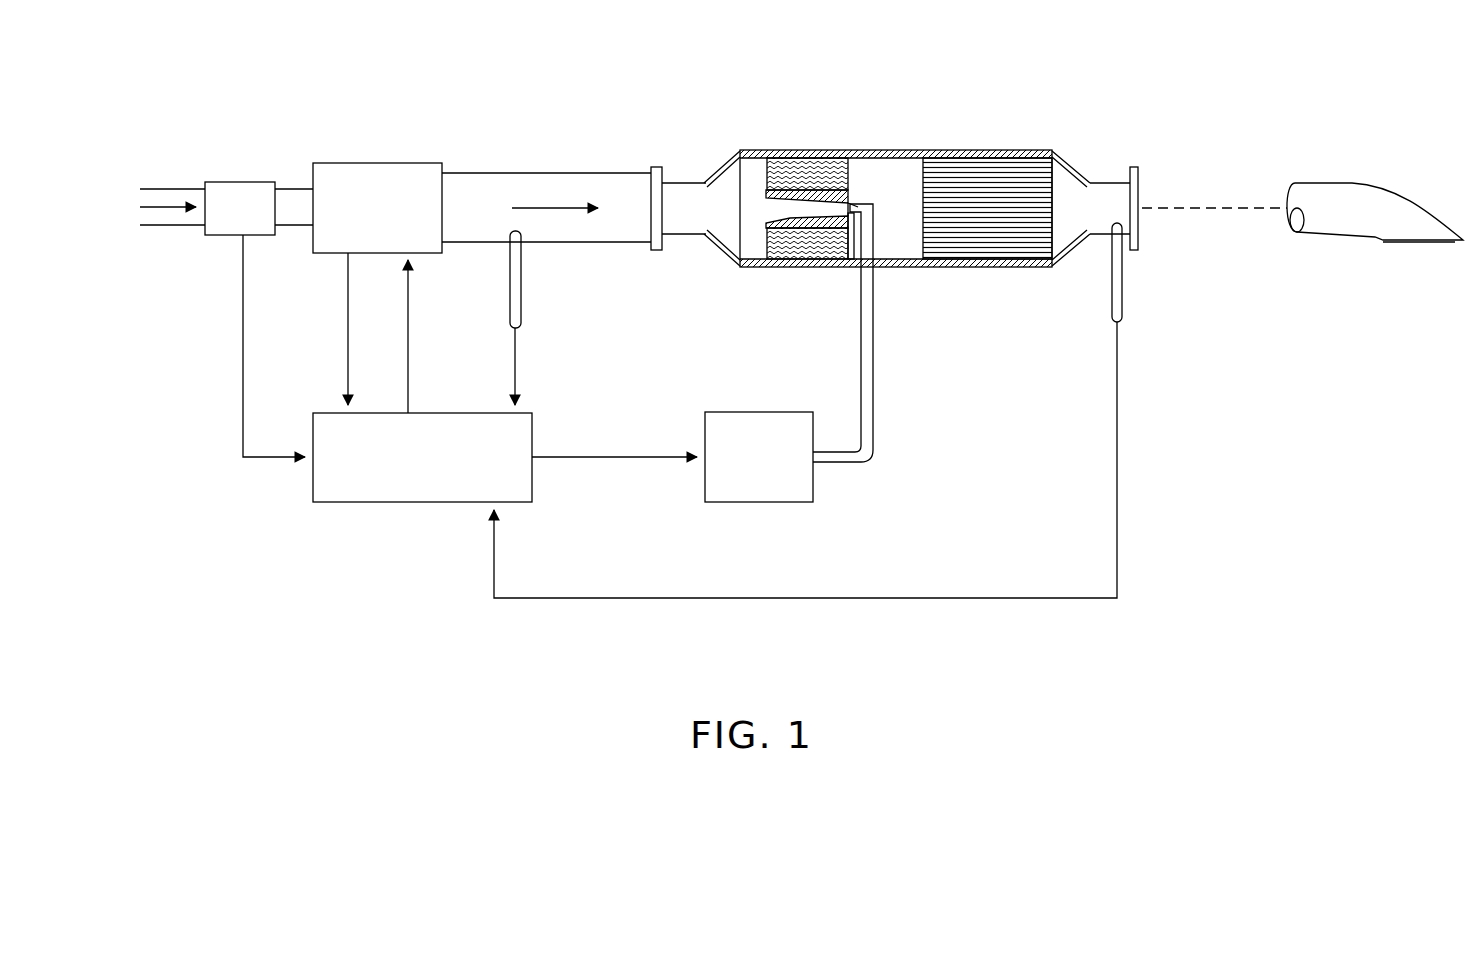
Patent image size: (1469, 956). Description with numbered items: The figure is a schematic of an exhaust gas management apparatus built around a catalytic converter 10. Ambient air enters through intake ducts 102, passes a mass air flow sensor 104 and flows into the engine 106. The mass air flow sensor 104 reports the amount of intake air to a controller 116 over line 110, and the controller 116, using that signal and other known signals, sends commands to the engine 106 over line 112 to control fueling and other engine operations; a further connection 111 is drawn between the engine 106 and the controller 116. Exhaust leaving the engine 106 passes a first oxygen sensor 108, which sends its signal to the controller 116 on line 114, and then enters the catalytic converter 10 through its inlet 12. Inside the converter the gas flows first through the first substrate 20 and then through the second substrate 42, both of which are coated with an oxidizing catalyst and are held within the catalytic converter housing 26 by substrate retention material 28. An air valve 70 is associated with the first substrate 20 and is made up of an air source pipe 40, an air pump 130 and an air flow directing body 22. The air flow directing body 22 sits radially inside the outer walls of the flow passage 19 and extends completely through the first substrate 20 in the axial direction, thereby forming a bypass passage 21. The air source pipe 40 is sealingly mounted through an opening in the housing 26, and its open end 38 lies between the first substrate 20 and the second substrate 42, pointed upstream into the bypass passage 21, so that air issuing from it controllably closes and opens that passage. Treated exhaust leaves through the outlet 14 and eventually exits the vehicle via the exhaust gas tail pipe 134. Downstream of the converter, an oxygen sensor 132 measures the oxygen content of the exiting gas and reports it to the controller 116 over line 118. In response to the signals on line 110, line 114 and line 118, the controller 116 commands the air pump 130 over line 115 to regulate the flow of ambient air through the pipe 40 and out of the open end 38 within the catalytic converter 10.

The catalytic converter 10 is at (803, 146).
The inlet 12 is at (676, 182).
The outlet 14 is at (1118, 195).
The flow passage 19 is at (786, 197).
The first substrate 20 is at (800, 238).
The bypass passage 21 is at (841, 202).
The air flow directing body 22 is at (766, 196).
The catalytic converter housing 26 is at (812, 266).
The substrate retention material 28 is at (945, 150).
The open end 38 is at (858, 207).
The air source pipe 40 is at (867, 248).
The second substrate 42 is at (978, 188).
The air valve 70 is at (868, 191).
The intake ducts 102 is at (162, 189).
The mass air flow sensor 104 is at (245, 182).
The engine 106 is at (385, 163).
The first oxygen sensor 108 is at (521, 262).
The line 110 is at (243, 345).
The engine signal line 111 is at (348, 297).
The line 112 is at (408, 345).
The line 114 is at (516, 350).
The line 115 is at (647, 458).
The controller 116 is at (385, 502).
The line 118 is at (962, 598).
The air pump 130 is at (770, 502).
The oxygen sensor 132 is at (1122, 260).
The exhaust gas tail pipe 134 is at (1330, 228).